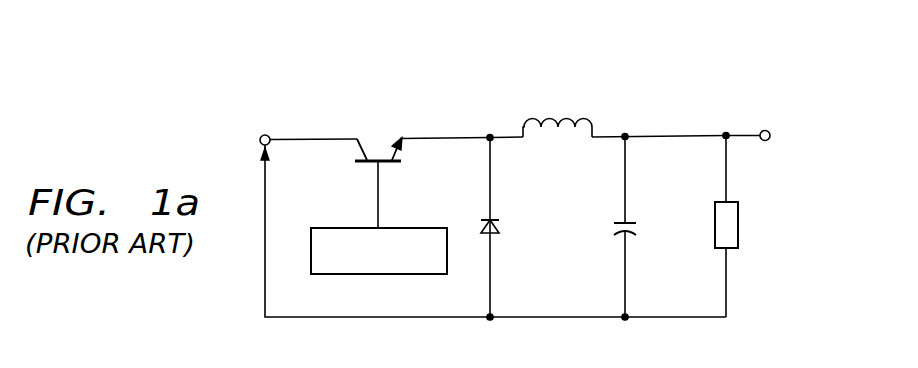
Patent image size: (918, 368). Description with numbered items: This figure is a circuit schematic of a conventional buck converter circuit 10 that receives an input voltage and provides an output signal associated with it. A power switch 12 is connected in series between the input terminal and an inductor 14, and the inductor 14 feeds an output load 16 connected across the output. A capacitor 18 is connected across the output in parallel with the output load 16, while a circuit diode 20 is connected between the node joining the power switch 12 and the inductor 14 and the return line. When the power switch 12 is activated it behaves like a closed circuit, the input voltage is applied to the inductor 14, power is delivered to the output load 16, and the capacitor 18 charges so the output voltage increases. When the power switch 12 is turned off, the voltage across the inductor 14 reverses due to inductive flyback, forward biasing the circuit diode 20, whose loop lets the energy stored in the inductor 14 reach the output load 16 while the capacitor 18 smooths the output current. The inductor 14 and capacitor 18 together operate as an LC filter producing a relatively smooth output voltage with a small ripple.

The buck converter circuit 10 is at (319, 70).
The power switch 12 is at (379, 133).
The inductor 14 is at (565, 128).
The output load 16 is at (738, 224).
The capacitor 18 is at (631, 238).
The circuit diode 20 is at (495, 238).